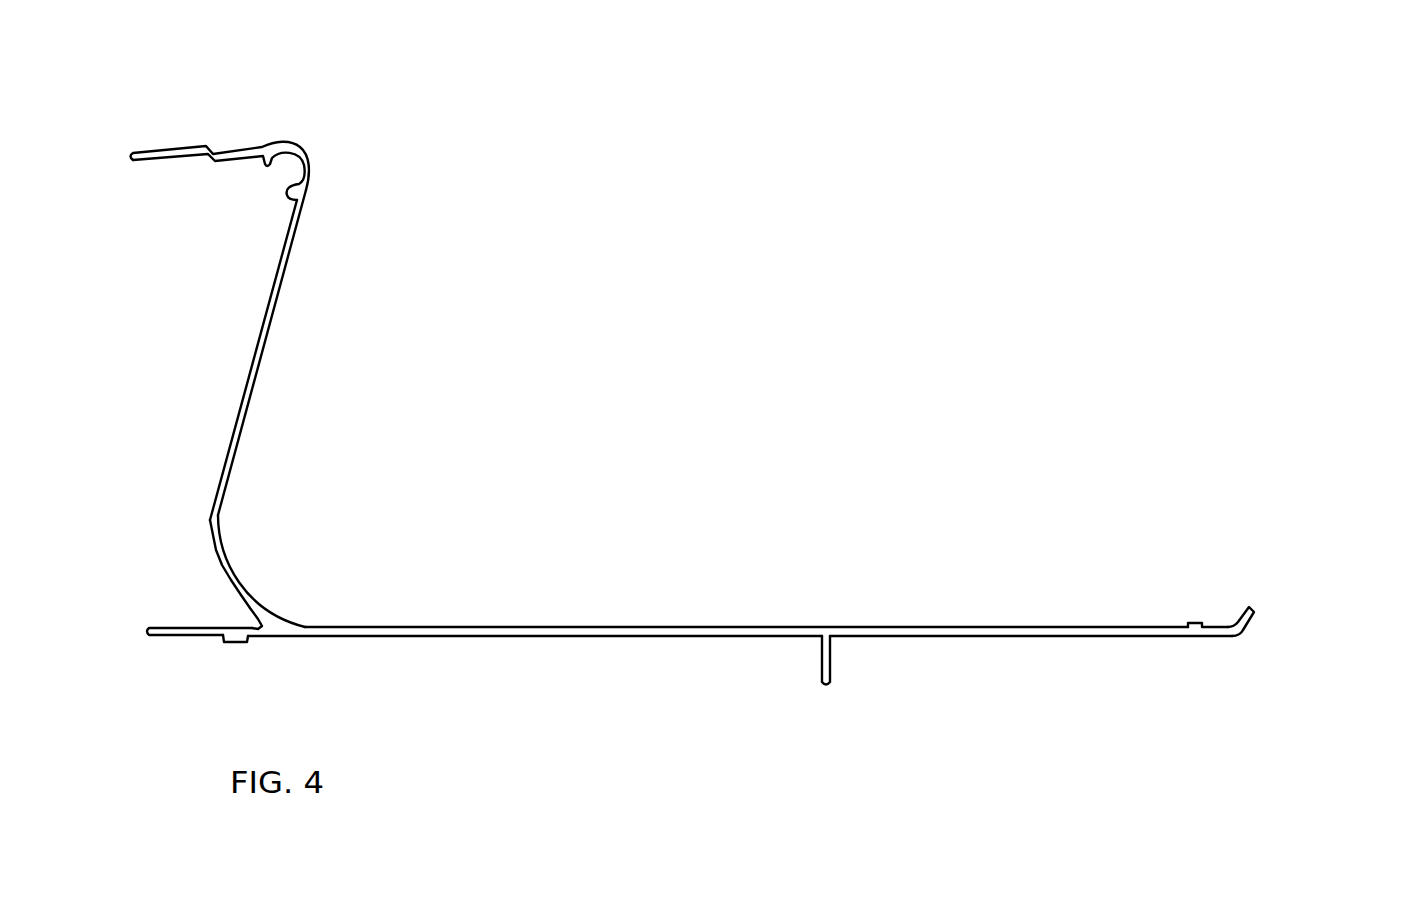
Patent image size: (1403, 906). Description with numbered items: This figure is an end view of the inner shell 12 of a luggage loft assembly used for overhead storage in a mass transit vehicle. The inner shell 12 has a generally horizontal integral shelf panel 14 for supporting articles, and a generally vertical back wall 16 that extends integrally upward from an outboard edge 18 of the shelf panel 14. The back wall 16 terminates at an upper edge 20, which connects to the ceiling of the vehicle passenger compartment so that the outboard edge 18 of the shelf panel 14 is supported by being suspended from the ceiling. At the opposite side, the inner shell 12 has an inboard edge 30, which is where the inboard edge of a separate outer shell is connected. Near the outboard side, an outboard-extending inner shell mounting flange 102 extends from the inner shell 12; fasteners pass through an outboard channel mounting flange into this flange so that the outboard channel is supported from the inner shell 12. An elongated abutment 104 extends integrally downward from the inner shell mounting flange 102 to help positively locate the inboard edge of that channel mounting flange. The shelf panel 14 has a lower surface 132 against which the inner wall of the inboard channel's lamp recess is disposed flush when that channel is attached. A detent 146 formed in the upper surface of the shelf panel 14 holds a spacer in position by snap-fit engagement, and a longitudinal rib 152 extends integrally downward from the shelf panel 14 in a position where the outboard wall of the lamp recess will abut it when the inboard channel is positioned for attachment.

The inner shell 12 is at (442, 627).
The shelf panel 14 is at (716, 627).
The back wall 16 is at (266, 340).
The outboard edge 18 is at (305, 627).
The upper edge 20 is at (133, 150).
The inboard edge 30 is at (1252, 609).
The inner shell mounting flange 102 is at (144, 626).
The elongated abutment 104 is at (241, 643).
The lower surface 132 is at (1110, 637).
The detent 146 is at (1201, 624).
The longitudinal rib 152 is at (831, 670).